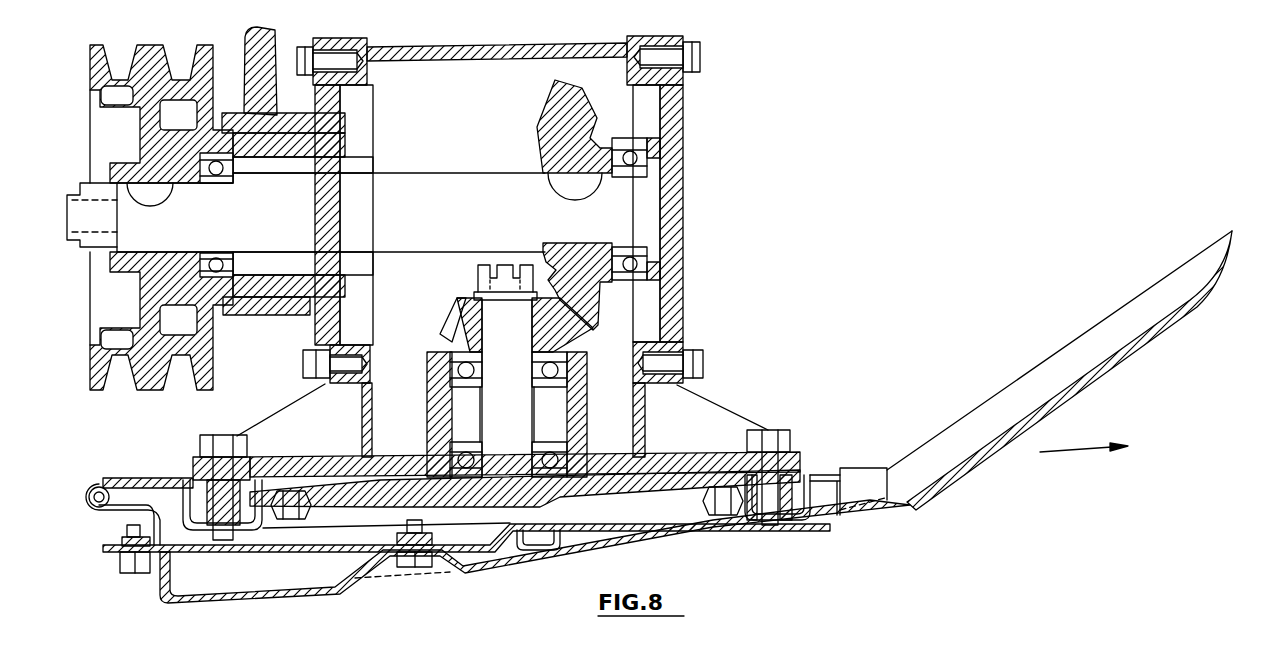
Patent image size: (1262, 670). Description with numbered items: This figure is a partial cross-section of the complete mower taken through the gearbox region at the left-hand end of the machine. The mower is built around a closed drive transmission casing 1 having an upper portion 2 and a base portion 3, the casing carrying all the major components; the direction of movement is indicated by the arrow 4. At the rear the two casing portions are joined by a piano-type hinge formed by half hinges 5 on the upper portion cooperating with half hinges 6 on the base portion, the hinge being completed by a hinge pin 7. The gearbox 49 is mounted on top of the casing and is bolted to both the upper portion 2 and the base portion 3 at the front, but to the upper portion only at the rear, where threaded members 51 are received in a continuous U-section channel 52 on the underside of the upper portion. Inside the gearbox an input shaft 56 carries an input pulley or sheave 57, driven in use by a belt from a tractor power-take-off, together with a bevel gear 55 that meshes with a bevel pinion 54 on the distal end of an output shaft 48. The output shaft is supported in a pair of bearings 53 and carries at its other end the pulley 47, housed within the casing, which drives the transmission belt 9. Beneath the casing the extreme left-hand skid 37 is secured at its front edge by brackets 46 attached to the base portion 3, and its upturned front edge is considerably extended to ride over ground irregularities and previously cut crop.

The drive transmission casing 1 is at (145, 585).
The upper portion 2 is at (162, 478).
The base portion 3 is at (250, 548).
The arrow 4 is at (1085, 450).
The half hinges 5 is at (99, 487).
The half hinges 6 is at (103, 472).
The hinge pin 7 is at (150, 497).
The transmission belt 9 is at (289, 519).
The skid 37 is at (620, 552).
The brackets 46 is at (862, 468).
The pulley 47 is at (423, 495).
The output shaft 48 is at (520, 397).
The gearbox 49 is at (711, 164).
The threaded members 51 is at (238, 522).
The U-section channel 52 is at (196, 512).
The bearings 53 is at (430, 443).
The bevel pinion 54 is at (455, 318).
The bevel gear 55 is at (586, 312).
The input shaft 56 is at (432, 226).
The input pulley or sheave 57 is at (217, 347).